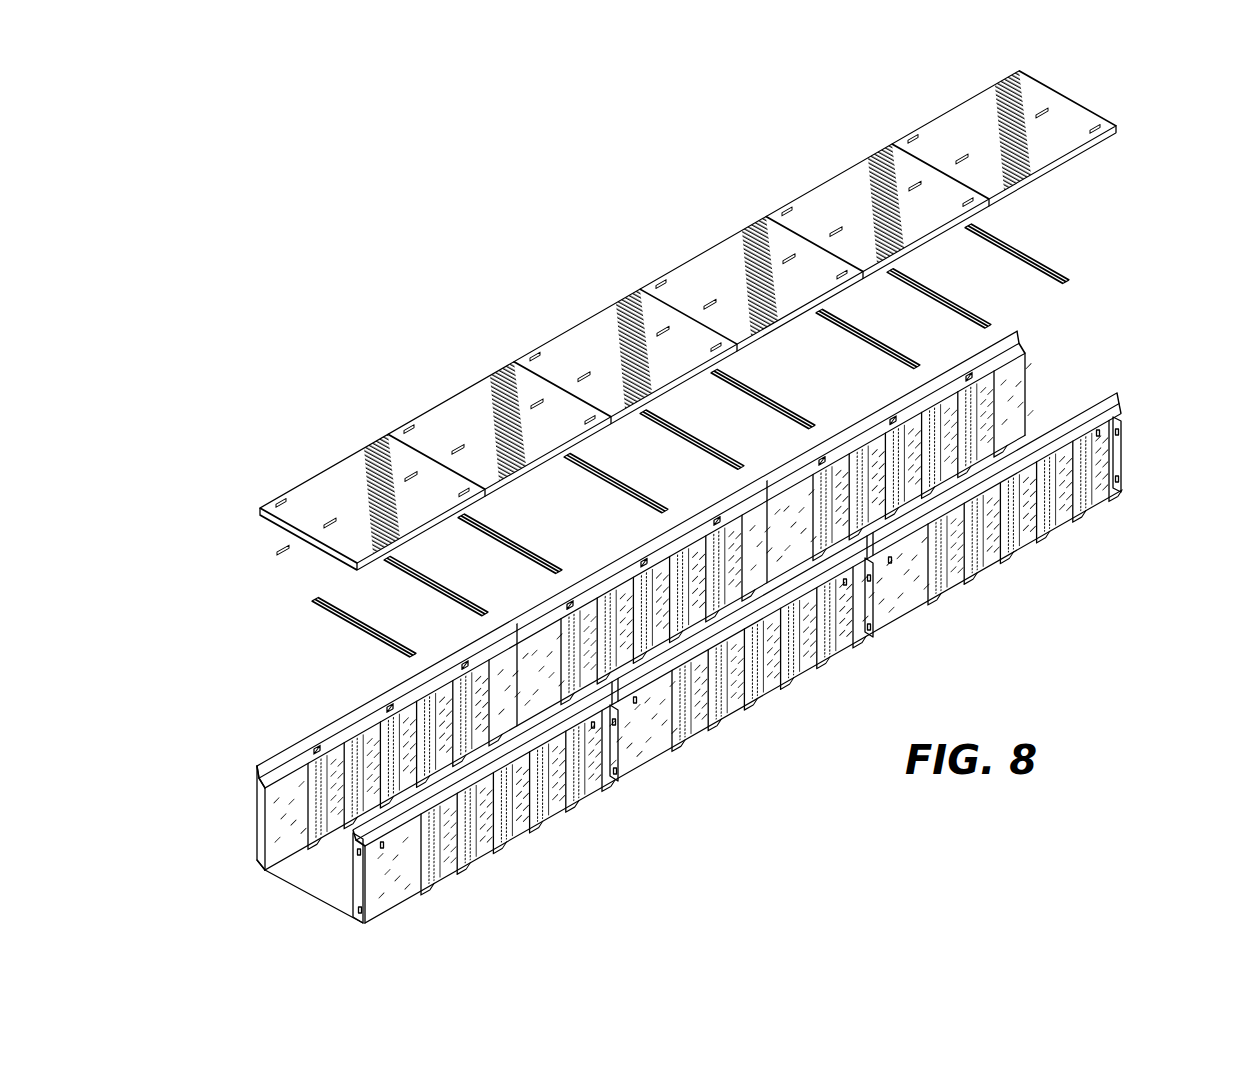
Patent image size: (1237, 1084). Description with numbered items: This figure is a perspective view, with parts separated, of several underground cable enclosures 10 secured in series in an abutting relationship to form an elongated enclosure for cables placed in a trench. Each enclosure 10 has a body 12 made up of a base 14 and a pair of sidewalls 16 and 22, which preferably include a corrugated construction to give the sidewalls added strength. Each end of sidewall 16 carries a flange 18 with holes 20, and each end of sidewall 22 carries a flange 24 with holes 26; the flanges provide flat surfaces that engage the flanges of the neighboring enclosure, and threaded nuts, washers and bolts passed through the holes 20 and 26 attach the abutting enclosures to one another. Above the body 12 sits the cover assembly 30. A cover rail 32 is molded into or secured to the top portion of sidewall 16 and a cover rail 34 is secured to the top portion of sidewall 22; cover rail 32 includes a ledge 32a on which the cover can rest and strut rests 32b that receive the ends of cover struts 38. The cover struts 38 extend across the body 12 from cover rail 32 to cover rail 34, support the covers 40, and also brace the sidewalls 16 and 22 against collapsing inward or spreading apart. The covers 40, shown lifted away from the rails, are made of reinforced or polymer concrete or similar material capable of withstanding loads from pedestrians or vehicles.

The underground cable enclosure 10 is at (845, 125).
The body 12 is at (262, 883).
The base 14 is at (336, 906).
The sidewall 16 is at (1005, 410).
The flange 18 is at (231, 819).
The holes 20 is at (256, 774).
The sidewall 22 is at (1085, 483).
The flange 24 is at (1122, 445).
The holes 26 is at (1123, 421).
The cover assembly 30 is at (683, 320).
The cover rail 32 is at (658, 545).
The ledge 32a is at (638, 554).
The strut rests 32b is at (643, 563).
The cover rail 34 is at (1102, 398).
The cover struts 38 is at (340, 617).
The covers 40 is at (922, 140).